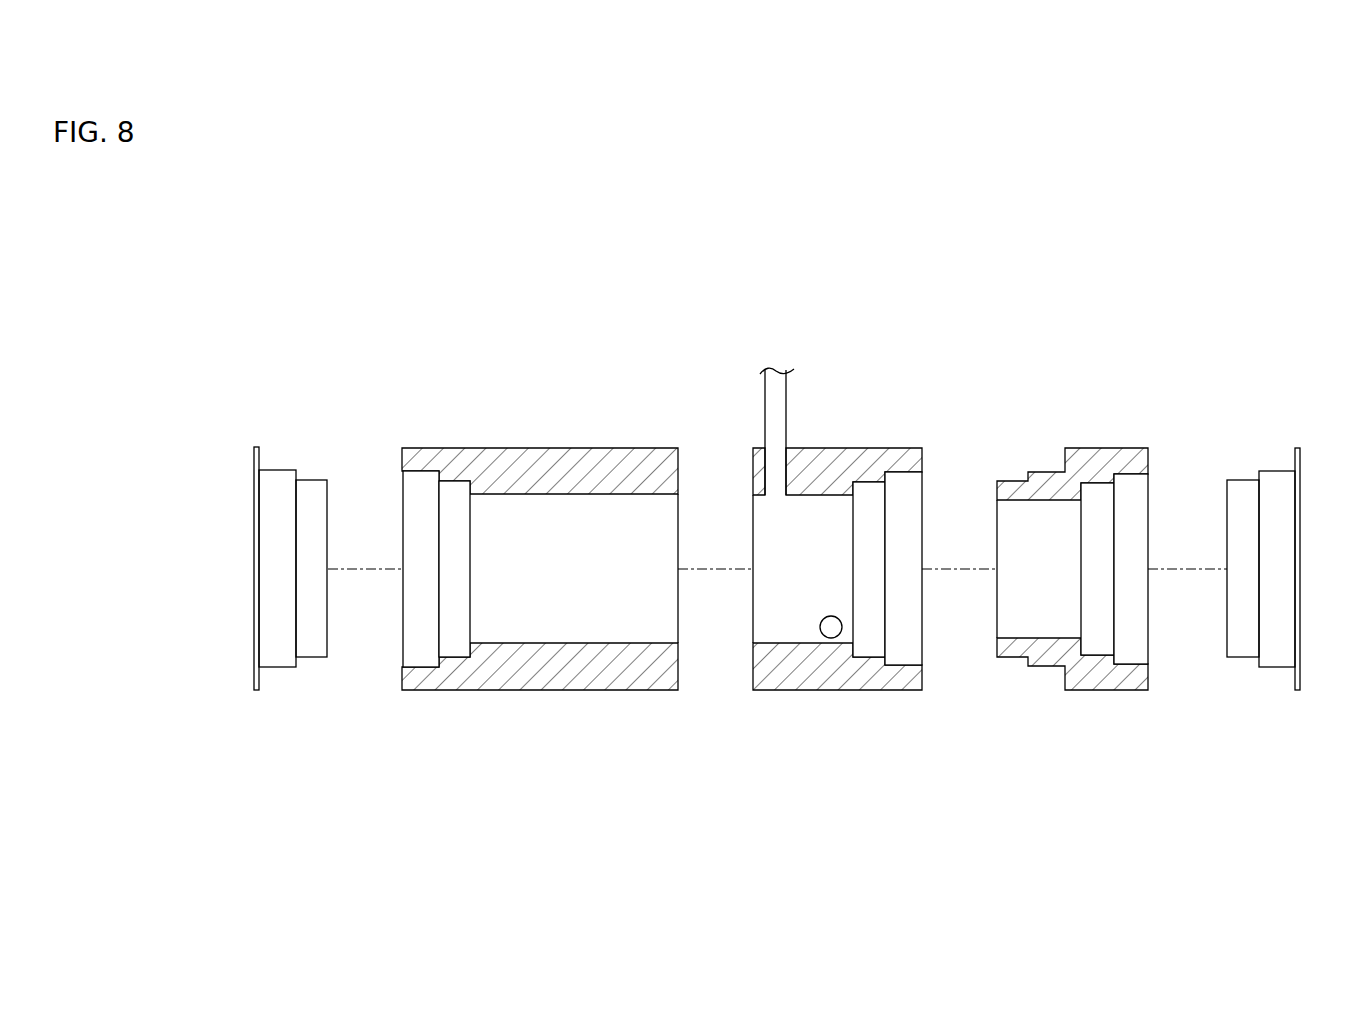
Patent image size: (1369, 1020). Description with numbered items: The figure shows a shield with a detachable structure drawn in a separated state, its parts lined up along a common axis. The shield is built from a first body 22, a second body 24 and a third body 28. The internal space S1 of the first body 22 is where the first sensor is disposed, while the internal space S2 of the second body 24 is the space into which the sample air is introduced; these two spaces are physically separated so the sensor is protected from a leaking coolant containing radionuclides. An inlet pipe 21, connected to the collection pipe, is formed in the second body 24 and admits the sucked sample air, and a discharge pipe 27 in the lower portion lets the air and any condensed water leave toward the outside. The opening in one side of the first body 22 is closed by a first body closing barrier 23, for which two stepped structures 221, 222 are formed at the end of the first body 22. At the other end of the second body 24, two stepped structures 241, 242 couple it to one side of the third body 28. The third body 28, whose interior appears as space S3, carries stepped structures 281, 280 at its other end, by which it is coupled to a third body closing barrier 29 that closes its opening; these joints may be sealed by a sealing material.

The inlet pipe 21 is at (763, 403).
The first body 22 is at (568, 457).
The stepped structure 221 is at (453, 480).
The stepped structure 222 is at (412, 470).
The first body closing barrier 23 is at (278, 543).
The second body 24 is at (821, 452).
The stepped structure 241 is at (867, 480).
The stepped structure 242 is at (913, 471).
The discharge pipe 27 is at (830, 630).
The third body 28 is at (1010, 490).
The step portion 280 is at (1133, 470).
The stepped structure 281 is at (1092, 480).
The third body closing barrier 29 is at (1278, 548).
The internal space of the first body S1 is at (581, 616).
The internal space of the second body S2 is at (796, 616).
The third space S3 is at (1059, 616).